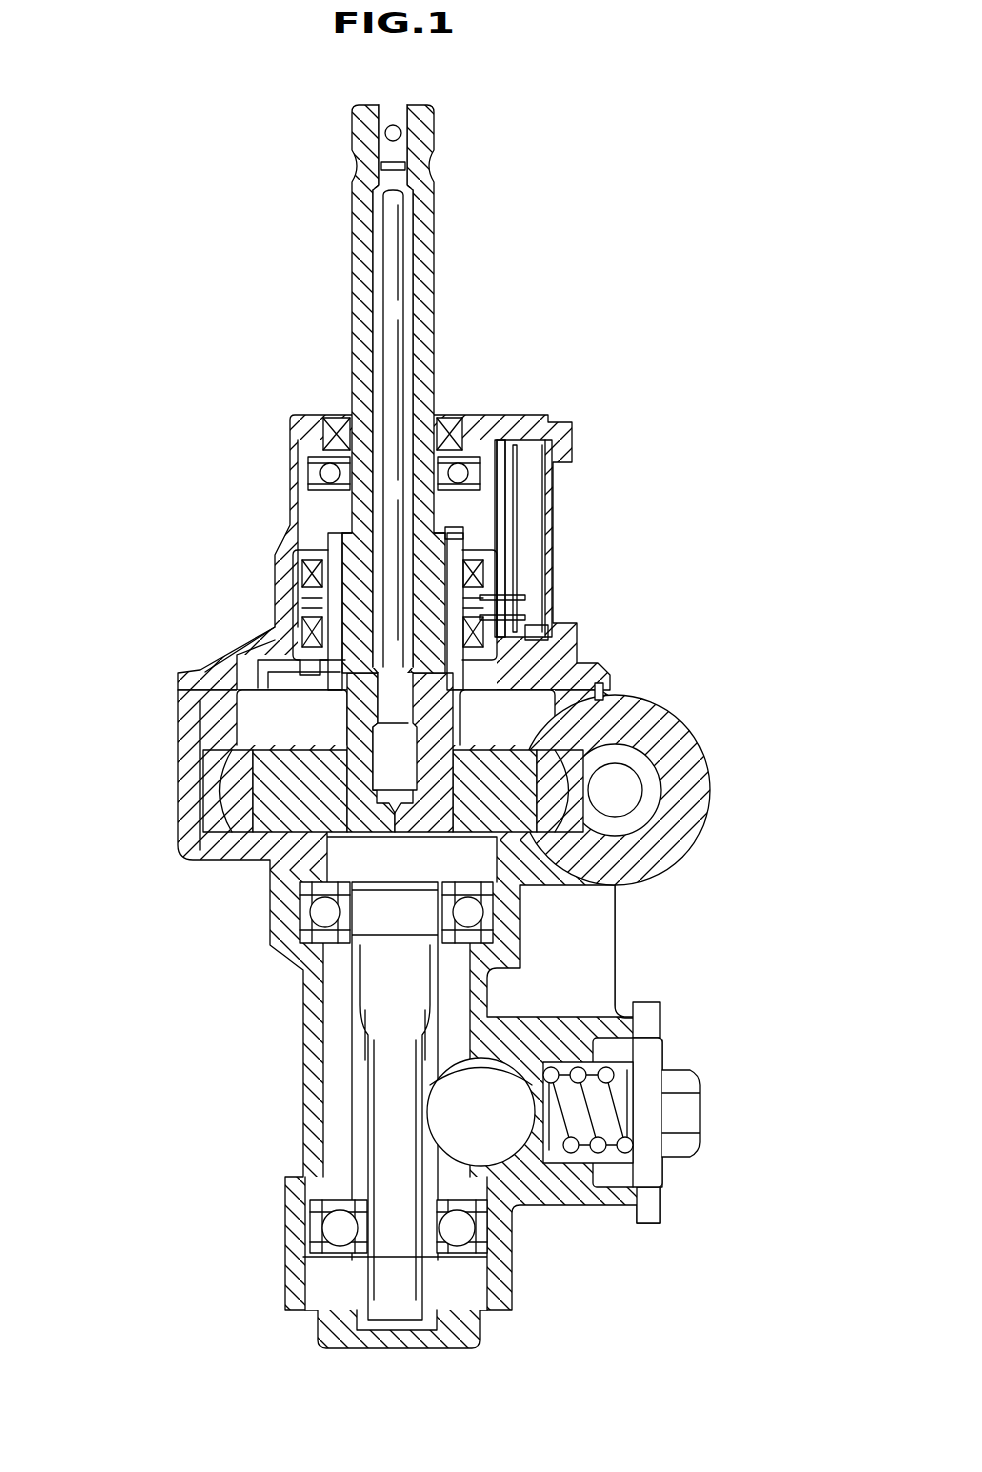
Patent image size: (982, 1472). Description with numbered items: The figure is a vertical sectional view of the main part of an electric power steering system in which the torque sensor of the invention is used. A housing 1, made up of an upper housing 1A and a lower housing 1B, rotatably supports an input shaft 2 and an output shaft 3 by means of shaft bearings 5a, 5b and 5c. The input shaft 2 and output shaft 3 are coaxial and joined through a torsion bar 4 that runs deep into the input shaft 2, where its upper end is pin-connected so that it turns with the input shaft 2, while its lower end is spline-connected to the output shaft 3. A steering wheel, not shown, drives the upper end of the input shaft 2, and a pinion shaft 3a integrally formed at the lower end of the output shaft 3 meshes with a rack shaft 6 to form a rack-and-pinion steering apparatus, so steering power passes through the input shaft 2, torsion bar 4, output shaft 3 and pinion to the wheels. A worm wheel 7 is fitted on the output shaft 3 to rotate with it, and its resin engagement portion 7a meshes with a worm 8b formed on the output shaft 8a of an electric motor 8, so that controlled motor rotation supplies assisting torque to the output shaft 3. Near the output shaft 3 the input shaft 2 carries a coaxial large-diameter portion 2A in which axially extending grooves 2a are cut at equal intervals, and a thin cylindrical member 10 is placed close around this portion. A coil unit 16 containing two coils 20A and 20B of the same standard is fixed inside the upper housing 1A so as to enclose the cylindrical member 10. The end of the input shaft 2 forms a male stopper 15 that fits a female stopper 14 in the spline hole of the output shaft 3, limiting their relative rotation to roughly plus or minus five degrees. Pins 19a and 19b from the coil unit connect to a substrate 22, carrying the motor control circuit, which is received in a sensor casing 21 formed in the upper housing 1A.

The housing 1 is at (354, 881).
The upper housing 1A is at (182, 663).
The lower housing 1B is at (380, 1019).
The input shaft 2 is at (433, 266).
The large-diameter portion 2A is at (345, 527).
The grooves 2a is at (478, 528).
The output shaft 3 is at (320, 1101).
The pinion shaft 3a is at (373, 1110).
The torsion bar 4 is at (400, 322).
The shaft bearing 5a is at (320, 473).
The shaft bearing 5b is at (323, 912).
The shaft bearing 5c is at (338, 1228).
The rack shaft 6 is at (483, 1150).
The worm wheel 7 is at (337, 752).
The resin engagement portion 7a is at (255, 800).
The electric motor 8 is at (639, 790).
The output shaft of electric motor 8a is at (624, 785).
The worm 8b is at (637, 810).
The thin cylindrical member 10 is at (333, 537).
The female stopper 14 is at (600, 693).
The male stopper 15 is at (340, 650).
The coil unit 16 is at (297, 578).
The pin 19a is at (520, 597).
The pin 19b is at (520, 617).
The coil 20A is at (500, 560).
The coil 20B is at (535, 640).
The sensor casing 21 is at (517, 440).
The substrate 22 is at (518, 475).